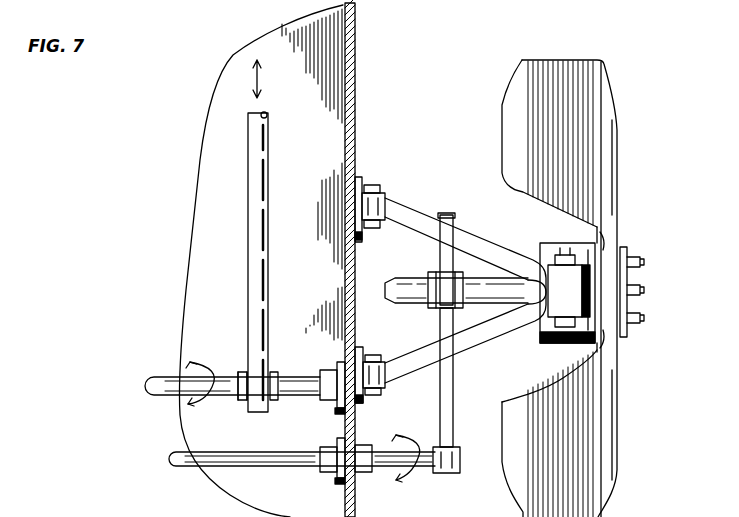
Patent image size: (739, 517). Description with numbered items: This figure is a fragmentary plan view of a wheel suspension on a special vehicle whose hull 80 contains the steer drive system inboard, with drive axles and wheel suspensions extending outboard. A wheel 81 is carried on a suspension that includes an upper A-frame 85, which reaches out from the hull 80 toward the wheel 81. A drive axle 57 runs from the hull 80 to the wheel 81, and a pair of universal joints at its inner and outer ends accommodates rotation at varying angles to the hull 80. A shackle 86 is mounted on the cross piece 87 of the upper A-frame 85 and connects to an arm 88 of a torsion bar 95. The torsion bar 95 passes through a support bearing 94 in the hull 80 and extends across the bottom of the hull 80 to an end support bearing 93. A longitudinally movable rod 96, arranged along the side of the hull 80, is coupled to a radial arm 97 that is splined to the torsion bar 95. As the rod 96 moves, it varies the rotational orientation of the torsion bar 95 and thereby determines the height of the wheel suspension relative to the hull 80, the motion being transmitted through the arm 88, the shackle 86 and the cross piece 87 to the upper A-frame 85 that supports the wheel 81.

The hull 80 is at (360, 47).
The wheel 81 is at (620, 136).
The upper A-frame 85 is at (484, 244).
The shackle 86 is at (424, 308).
The cross piece 87 is at (440, 256).
The drive axle 57 is at (392, 304).
The arm 88 is at (453, 384).
The end support bearing 93 is at (333, 404).
The support bearing 94 is at (333, 480).
The torsion bar 95 is at (290, 372).
The longitudinally movable rod 96 is at (248, 262).
The radial arm 97 is at (240, 372).